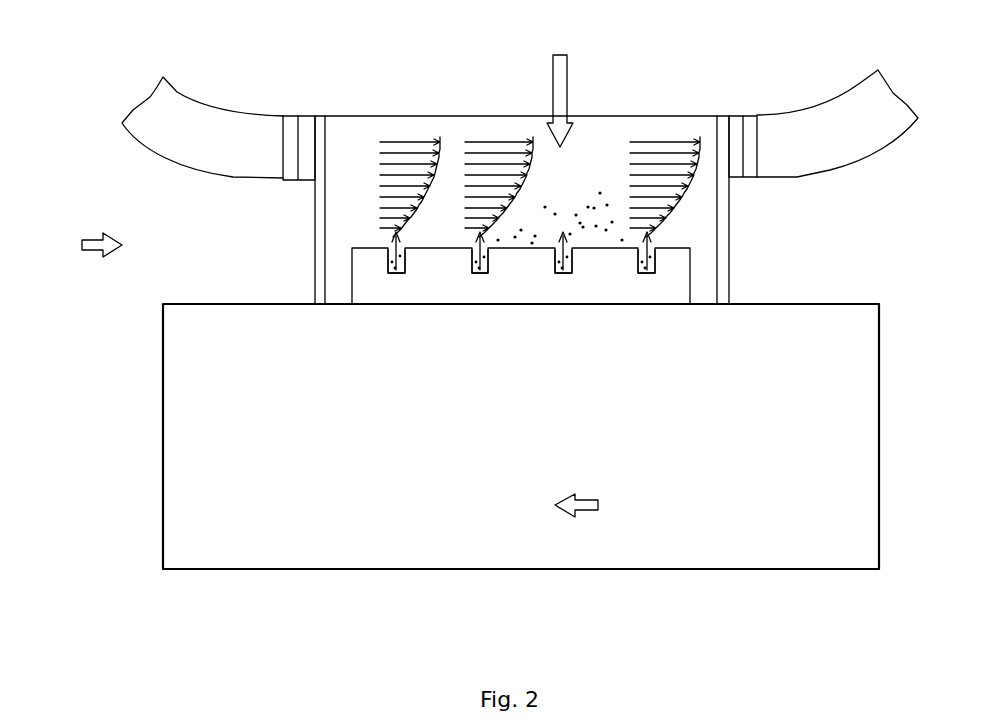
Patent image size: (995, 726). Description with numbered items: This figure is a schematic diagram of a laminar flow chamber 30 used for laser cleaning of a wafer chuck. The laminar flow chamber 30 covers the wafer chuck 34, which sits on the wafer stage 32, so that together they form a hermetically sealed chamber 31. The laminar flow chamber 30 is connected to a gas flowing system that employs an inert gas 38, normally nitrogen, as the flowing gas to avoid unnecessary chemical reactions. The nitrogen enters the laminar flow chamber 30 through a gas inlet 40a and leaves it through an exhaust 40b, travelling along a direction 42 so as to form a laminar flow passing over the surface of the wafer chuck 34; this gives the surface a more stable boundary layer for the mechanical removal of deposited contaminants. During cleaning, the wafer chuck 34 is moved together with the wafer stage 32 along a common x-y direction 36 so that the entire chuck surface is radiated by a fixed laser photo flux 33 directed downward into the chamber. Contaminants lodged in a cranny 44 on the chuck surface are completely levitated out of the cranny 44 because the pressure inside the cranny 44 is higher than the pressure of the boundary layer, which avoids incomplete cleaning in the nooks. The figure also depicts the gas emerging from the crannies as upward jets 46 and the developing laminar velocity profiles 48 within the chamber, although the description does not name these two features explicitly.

The inert gas 38 is at (98, 82).
The gas inlet 40a is at (228, 123).
The exhaust 40b is at (795, 120).
The laminar flow chamber 30 is at (680, 113).
The hermetically sealed chamber 31 is at (717, 218).
The wafer stage 32 is at (540, 435).
The fixed laser photo flux 33 is at (561, 87).
The wafer chuck 34 is at (680, 283).
The cranny 44 is at (405, 262).
The gas jets 46 is at (395, 228).
The gas velocity profile 48 is at (395, 142).
The direction 42 is at (119, 247).
The x-y direction 36 is at (594, 508).